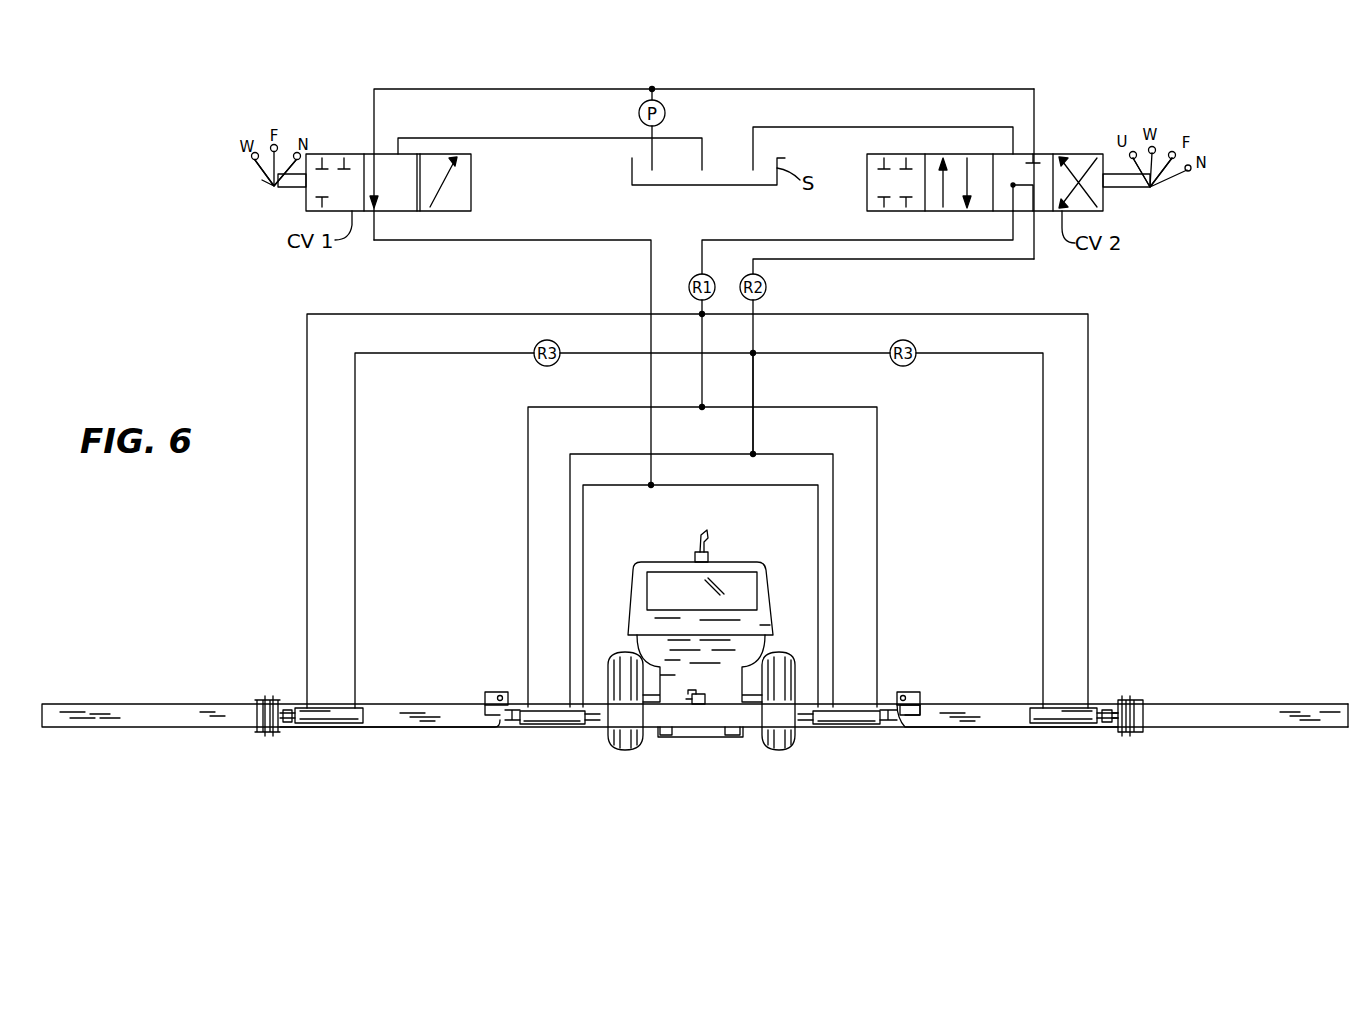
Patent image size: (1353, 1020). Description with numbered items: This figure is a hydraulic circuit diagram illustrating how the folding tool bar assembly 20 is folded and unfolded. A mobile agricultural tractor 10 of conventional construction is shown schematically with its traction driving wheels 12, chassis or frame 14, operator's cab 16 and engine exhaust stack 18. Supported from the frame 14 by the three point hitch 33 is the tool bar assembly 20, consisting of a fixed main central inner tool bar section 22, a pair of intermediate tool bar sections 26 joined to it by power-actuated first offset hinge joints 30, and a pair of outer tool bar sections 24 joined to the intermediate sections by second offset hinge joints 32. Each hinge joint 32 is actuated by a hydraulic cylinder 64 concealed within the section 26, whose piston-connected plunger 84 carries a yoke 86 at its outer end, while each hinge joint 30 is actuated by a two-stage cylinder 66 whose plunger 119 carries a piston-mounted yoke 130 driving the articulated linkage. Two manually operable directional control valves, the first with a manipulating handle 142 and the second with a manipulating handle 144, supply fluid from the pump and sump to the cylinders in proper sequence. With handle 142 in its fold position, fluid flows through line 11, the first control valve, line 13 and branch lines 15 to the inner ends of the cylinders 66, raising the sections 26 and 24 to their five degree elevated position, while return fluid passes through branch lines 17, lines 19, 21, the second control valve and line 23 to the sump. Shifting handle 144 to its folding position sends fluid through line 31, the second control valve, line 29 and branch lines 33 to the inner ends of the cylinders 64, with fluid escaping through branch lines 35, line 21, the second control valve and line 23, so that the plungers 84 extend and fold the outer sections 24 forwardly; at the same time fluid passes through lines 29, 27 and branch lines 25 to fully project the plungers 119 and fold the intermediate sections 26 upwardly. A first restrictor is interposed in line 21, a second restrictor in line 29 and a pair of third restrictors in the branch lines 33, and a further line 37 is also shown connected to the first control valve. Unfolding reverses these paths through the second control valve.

The mobile agricultural tractor 10 is at (702, 650).
The fluid line 11 is at (543, 89).
The traction driving wheels 12 is at (608, 742).
The fluid line 13 is at (535, 240).
The chassis or frame 14 is at (735, 660).
The branch fluid lines 15 is at (605, 485).
The operator's cab 16 is at (772, 585).
The branch fluid lines 17 is at (528, 590).
The engine exhaust stack 18 is at (694, 555).
The fluid line 19 is at (702, 373).
The folding tool bar assembly 20 is at (733, 697).
The fluid line 21 is at (812, 240).
The main central inner tool bar section 22 is at (750, 738).
The fluid line 23 is at (868, 127).
The outer tool bar sections 24 is at (130, 688).
The branch fluid lines 25 is at (617, 454).
The intermediate tool bar sections 26 is at (405, 728).
The fluid line 27 is at (753, 400).
The fluid line 29 is at (882, 259).
The first offset hinge joint 30 is at (485, 692).
The fluid line 31 is at (869, 89).
The second offset hinge joint 32 is at (275, 699).
The three point hitch; branch fluid lines 33 is at (492, 353).
The branch fluid lines 35 is at (488, 314).
The hydraulic line 37 is at (544, 138).
The hydraulic cylinder 64 is at (326, 723).
The two-stage cylinder 66 is at (540, 724).
The plunger 84 is at (291, 723).
The yoke 86 is at (1118, 730).
The plunger 119 is at (520, 716).
The piston-mounted yoke 130 is at (905, 718).
The manipulating handle 142 is at (272, 187).
The manipulating handle 144 is at (1150, 187).